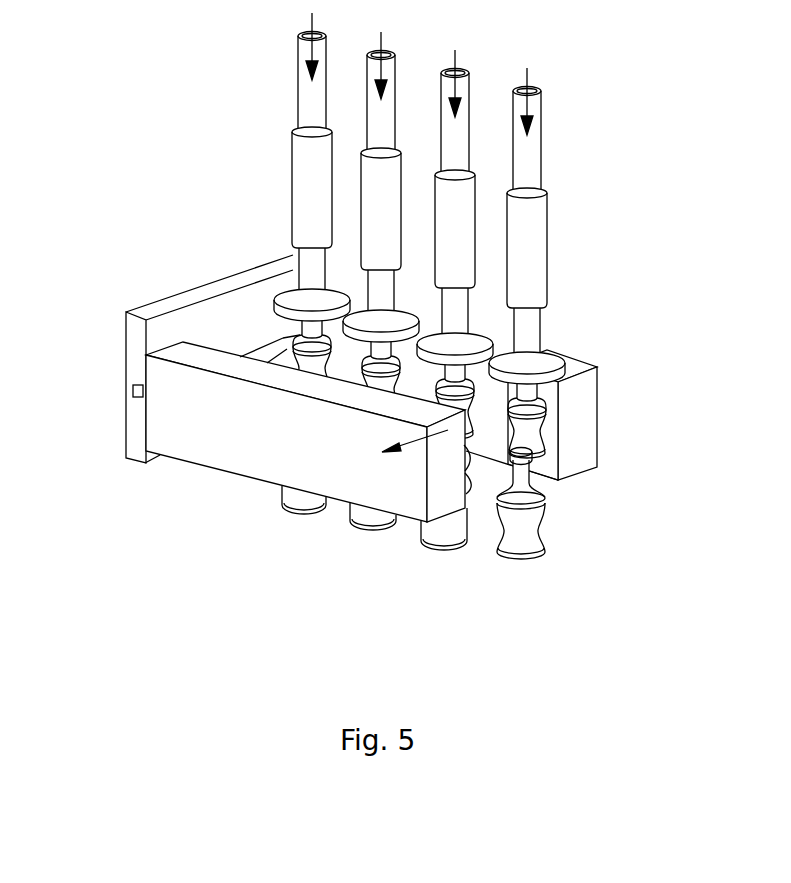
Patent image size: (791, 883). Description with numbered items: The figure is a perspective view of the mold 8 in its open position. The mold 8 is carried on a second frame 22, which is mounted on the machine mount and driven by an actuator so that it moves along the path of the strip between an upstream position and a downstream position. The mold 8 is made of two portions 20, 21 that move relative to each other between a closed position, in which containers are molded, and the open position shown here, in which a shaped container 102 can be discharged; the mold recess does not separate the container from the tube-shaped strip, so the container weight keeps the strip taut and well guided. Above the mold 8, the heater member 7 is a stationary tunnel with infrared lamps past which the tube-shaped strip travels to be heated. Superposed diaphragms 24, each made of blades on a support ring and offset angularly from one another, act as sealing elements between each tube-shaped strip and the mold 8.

The heater member 7 is at (512, 241).
The diaphragm 24 is at (348, 288).
The second frame 22 is at (137, 431).
The mold 8 is at (202, 410).
The mold portion 20 is at (270, 468).
The mold portion 21 is at (580, 410).
The container 102 is at (584, 612).